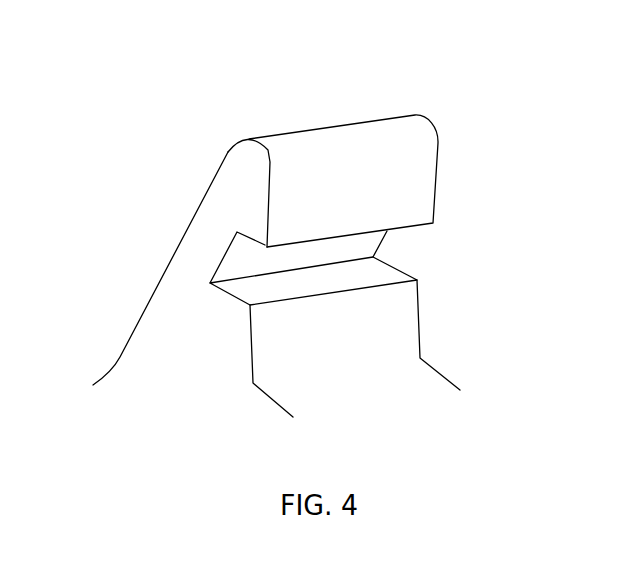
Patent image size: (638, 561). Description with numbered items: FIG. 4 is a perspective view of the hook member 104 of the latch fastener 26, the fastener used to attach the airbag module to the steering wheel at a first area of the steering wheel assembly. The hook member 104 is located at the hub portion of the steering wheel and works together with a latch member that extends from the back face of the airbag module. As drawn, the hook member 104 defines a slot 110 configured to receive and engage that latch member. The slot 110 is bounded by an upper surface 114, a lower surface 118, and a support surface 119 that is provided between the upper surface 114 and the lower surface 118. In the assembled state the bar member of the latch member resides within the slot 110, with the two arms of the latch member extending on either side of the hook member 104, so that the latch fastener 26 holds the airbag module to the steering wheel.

The latch fastener 26 is at (456, 85).
The hook member 104 is at (403, 165).
The slot 110 is at (407, 238).
The upper surface 114 is at (263, 243).
The lower surface 118 is at (390, 272).
The support surface 119 is at (238, 262).